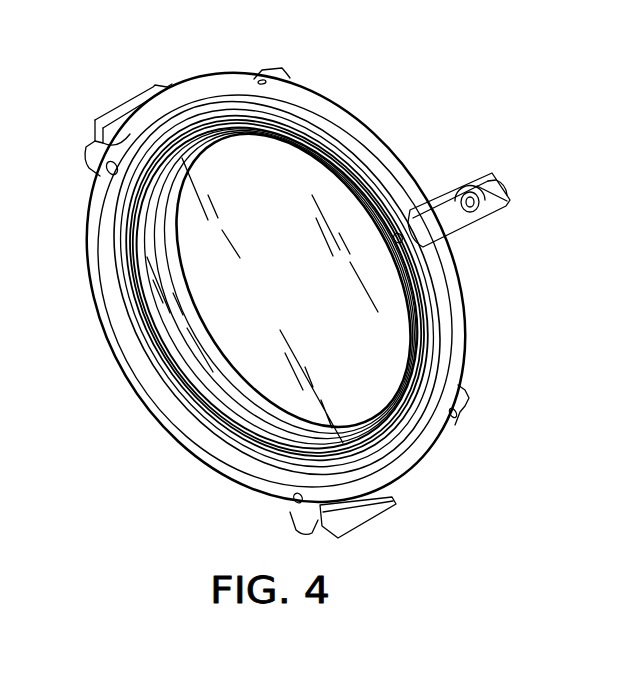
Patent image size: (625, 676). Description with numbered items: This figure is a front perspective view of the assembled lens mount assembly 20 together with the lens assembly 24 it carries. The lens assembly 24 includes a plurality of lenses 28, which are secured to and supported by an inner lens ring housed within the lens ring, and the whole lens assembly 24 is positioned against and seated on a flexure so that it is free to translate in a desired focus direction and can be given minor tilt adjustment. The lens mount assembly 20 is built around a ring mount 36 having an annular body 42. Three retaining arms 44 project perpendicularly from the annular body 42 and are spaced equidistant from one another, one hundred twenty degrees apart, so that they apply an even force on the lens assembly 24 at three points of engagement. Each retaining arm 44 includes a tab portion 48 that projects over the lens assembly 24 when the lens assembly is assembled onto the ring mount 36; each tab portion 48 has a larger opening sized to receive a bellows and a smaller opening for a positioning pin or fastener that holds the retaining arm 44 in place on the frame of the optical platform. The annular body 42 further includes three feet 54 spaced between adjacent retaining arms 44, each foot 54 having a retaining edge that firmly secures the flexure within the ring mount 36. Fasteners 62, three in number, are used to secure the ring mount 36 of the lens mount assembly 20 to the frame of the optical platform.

The lens mount assembly 20 is at (163, 427).
The lens assembly 24 is at (144, 291).
The lenses 28 is at (360, 335).
The ring mount 36 is at (363, 123).
The annular body 42 is at (223, 458).
The retaining arms 44 is at (132, 102).
The tab portion 48 is at (503, 202).
The feet 54 is at (278, 70).
The fasteners 62 is at (470, 192).